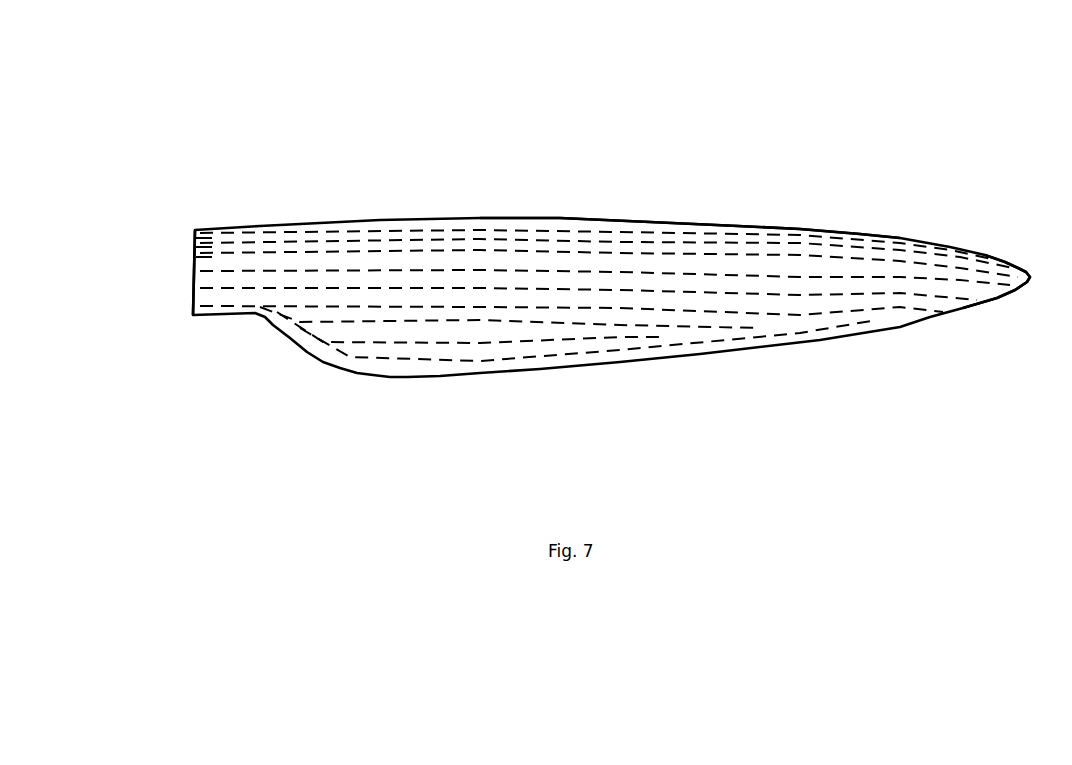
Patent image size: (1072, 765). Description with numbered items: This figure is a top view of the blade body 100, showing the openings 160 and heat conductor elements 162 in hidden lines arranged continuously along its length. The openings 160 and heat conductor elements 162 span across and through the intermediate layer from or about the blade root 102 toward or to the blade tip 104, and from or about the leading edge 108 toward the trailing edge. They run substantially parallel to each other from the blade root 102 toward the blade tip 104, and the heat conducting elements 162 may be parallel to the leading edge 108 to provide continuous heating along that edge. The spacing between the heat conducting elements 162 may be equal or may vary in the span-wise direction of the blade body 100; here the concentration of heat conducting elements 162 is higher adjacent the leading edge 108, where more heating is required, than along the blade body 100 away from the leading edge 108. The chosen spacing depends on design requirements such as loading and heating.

The blade body 100 is at (116, 63).
The blade root 102 is at (210, 270).
The blade tip 104 is at (998, 272).
The leading edge 108 is at (738, 226).
The openings 160 is at (880, 302).
The heat conductor elements 162 is at (930, 310).